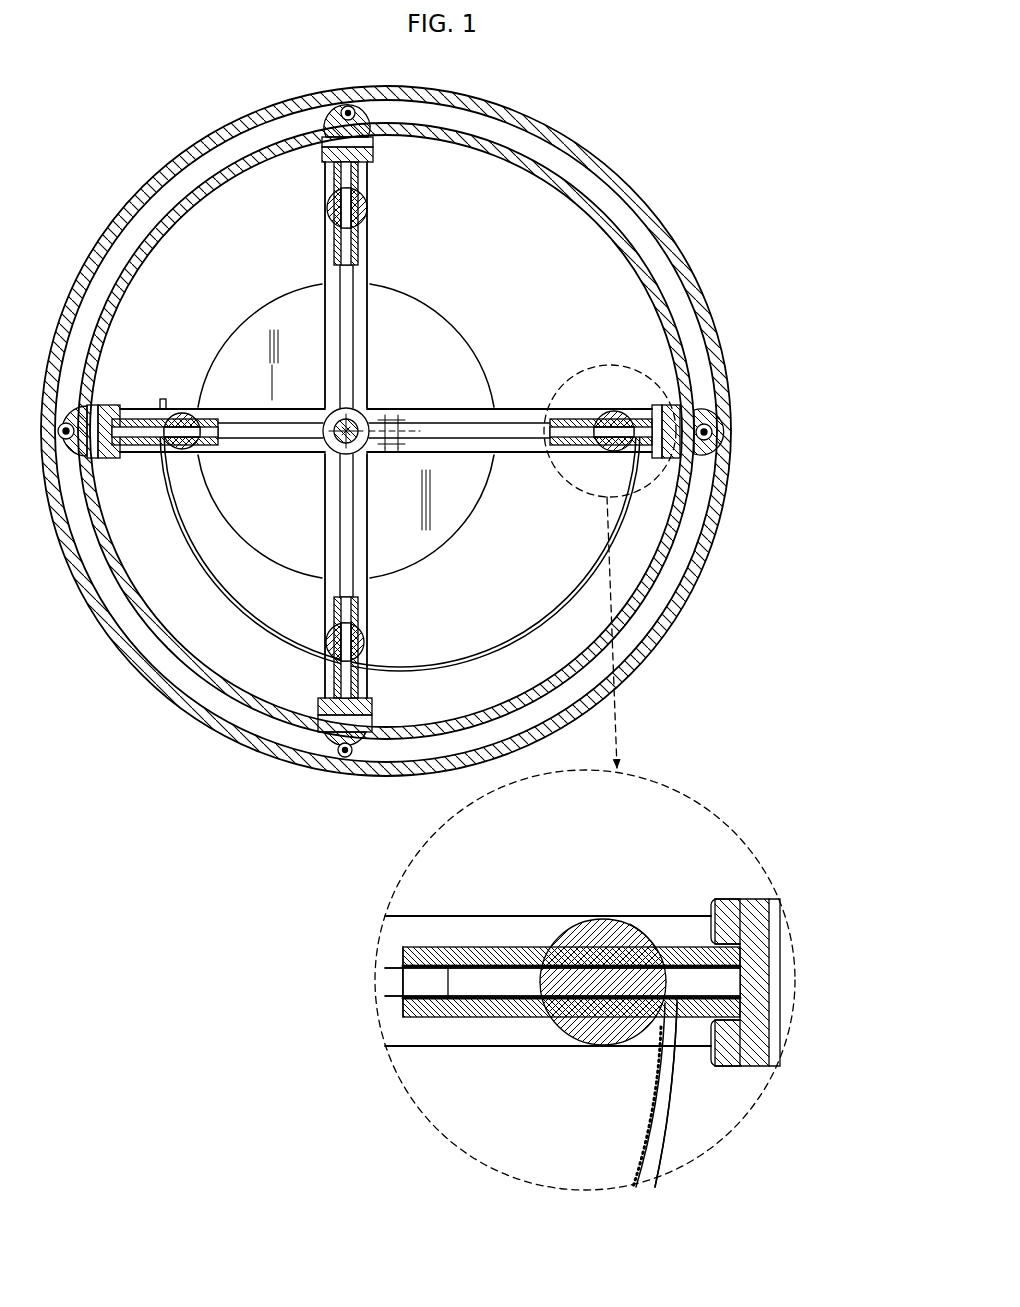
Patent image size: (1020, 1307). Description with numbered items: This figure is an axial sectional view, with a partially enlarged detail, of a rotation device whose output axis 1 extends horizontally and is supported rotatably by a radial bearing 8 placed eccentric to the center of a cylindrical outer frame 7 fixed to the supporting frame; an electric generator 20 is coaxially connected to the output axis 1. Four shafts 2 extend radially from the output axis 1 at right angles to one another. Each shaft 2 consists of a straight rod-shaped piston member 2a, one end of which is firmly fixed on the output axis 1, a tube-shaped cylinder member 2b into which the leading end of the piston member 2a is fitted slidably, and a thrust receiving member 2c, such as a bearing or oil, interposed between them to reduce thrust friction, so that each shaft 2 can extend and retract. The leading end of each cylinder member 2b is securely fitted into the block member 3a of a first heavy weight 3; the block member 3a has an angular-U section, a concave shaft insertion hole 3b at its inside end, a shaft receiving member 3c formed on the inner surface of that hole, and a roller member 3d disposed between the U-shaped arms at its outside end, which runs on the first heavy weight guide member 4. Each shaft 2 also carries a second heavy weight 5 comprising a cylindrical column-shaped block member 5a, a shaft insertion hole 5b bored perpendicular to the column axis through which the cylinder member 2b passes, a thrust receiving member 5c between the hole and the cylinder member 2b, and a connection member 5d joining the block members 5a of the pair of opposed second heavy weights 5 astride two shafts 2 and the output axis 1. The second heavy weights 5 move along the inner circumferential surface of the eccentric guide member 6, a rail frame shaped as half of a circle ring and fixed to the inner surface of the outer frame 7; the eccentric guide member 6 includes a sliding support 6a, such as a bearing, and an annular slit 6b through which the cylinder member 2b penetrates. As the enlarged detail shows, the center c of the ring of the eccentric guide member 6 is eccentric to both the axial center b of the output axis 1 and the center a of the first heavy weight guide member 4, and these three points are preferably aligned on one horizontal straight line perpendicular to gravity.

The output axis 1 is at (320, 455).
The shaft 2 is at (370, 364).
The piston member 2a is at (358, 300).
The cylinder member 2b is at (359, 225).
The thrust receiving member 2c is at (520, 1000).
The first heavy weight 3 is at (449, 625).
The block member 3a is at (372, 150).
The shaft insertion hole 3b is at (735, 1010).
The shaft receiving member 3c is at (711, 942).
The roller member 3d is at (333, 120).
The first heavy weight guide member 4 is at (120, 575).
The second heavy weight 5 is at (415, 639).
The block member 5a is at (328, 200).
The shaft insertion hole 5b is at (597, 1047).
The thrust receiving member 5c is at (646, 923).
The connection member 5d is at (326, 283).
The eccentric guide member 6 is at (520, 632).
The sliding support 6a is at (655, 1078).
The annular slit 6b is at (672, 1130).
The cylindrical outer frame 7 is at (640, 202).
The radial bearing 8 is at (398, 412).
The electric generator 20 is at (485, 520).
The center of the first heavy weight guide member a is at (392, 448).
The axial center of the output axis b is at (336, 424).
The center of the ring of the eccentric guide member c is at (403, 448).